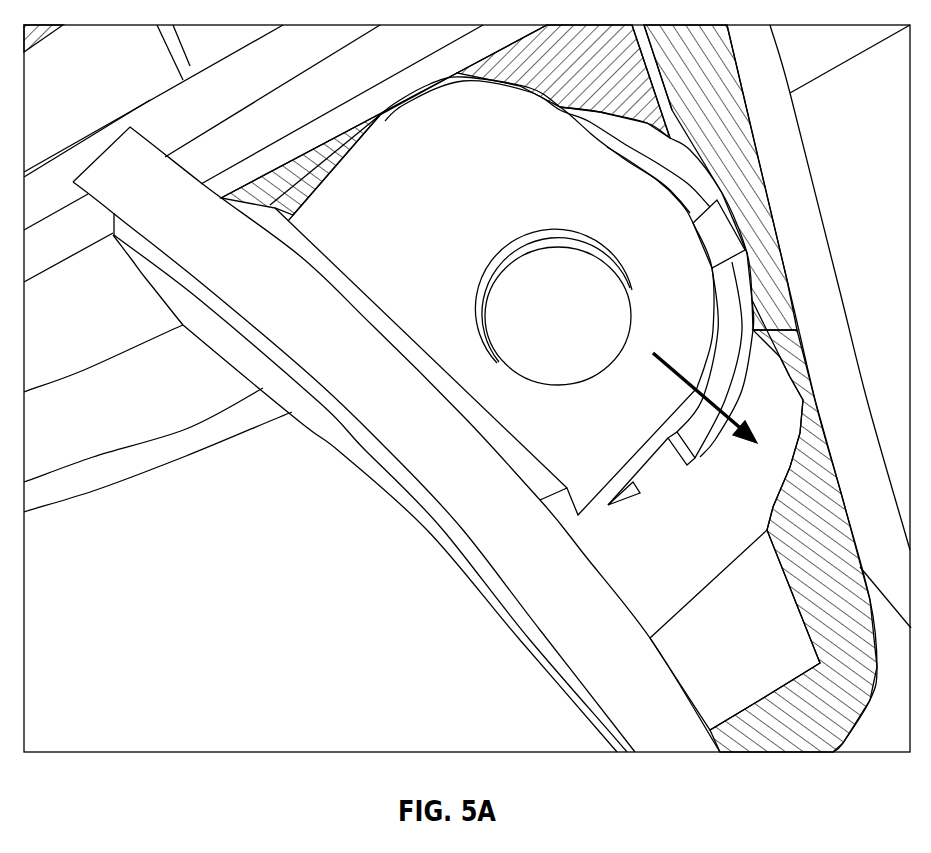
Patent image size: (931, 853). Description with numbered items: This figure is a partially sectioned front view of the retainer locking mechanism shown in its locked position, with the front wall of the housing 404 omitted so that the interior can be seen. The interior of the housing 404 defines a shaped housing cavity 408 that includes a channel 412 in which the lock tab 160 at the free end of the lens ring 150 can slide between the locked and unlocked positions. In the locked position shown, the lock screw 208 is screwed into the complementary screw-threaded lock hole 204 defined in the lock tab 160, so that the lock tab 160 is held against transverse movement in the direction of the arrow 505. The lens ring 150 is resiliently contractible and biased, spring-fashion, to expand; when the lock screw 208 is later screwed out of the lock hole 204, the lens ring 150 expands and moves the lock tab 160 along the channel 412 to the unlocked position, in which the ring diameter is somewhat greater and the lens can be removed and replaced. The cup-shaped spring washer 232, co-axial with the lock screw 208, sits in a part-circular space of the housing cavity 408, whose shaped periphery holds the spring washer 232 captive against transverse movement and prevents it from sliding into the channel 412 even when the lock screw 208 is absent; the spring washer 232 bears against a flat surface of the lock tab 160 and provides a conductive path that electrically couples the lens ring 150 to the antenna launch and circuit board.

The lens ring 150 is at (600, 686).
The lock tab 160 is at (490, 154).
The lock hole 204 is at (521, 236).
The lock screw 208 is at (580, 326).
The spring washer 232 is at (697, 447).
The housing 404 is at (813, 273).
The housing cavity 408 is at (682, 564).
The channel 412 is at (815, 410).
The arrow 505 is at (670, 370).